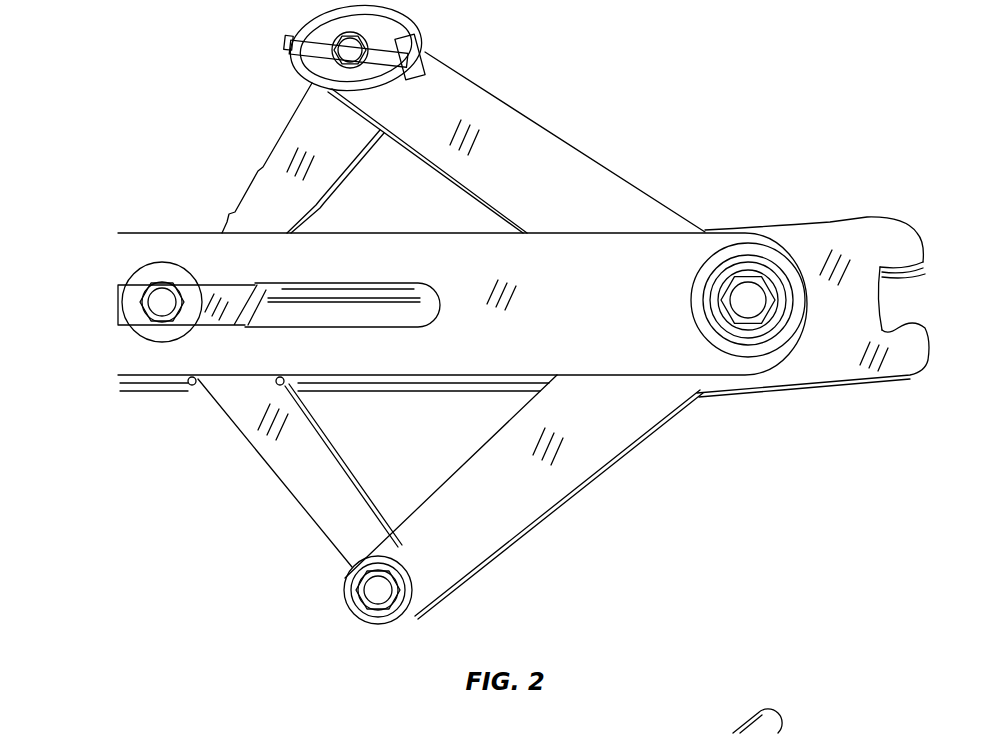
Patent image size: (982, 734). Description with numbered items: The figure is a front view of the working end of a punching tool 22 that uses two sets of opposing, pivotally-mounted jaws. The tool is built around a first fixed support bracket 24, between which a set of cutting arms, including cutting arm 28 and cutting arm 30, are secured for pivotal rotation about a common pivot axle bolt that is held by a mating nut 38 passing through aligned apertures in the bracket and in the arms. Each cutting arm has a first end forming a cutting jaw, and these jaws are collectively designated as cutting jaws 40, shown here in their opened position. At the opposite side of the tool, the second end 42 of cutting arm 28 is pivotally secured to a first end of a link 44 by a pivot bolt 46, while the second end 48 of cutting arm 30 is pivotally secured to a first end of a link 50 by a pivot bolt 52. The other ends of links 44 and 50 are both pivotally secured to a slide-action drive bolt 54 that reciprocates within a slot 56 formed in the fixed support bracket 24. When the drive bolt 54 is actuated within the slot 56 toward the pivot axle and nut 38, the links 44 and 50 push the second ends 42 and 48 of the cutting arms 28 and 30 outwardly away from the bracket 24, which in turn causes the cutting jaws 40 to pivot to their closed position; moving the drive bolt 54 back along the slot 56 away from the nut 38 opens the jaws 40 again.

The punching tool 22 is at (693, 94).
The first fixed support bracket 24 is at (655, 243).
The cutting arm 28 is at (588, 164).
The cutting arm 30 is at (548, 499).
The mating nut 38 is at (752, 296).
The cutting jaws 40 is at (929, 297).
The second end of cutting arm 28 42 is at (435, 76).
The link 44 is at (257, 192).
The pivot bolt 46 is at (350, 52).
The second end of cutting arm 30 48 is at (422, 597).
The link 50 is at (287, 491).
The pivot bolt 52 is at (365, 592).
The slide-action drive bolt 54 is at (157, 298).
The slot 56 is at (303, 311).